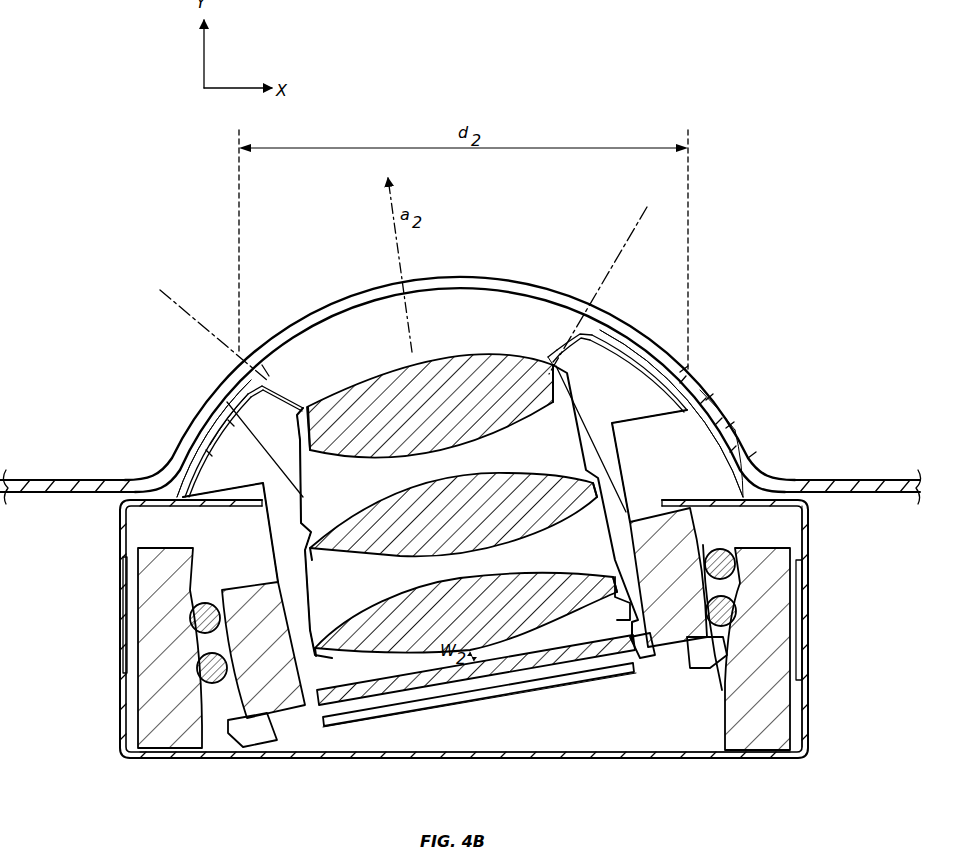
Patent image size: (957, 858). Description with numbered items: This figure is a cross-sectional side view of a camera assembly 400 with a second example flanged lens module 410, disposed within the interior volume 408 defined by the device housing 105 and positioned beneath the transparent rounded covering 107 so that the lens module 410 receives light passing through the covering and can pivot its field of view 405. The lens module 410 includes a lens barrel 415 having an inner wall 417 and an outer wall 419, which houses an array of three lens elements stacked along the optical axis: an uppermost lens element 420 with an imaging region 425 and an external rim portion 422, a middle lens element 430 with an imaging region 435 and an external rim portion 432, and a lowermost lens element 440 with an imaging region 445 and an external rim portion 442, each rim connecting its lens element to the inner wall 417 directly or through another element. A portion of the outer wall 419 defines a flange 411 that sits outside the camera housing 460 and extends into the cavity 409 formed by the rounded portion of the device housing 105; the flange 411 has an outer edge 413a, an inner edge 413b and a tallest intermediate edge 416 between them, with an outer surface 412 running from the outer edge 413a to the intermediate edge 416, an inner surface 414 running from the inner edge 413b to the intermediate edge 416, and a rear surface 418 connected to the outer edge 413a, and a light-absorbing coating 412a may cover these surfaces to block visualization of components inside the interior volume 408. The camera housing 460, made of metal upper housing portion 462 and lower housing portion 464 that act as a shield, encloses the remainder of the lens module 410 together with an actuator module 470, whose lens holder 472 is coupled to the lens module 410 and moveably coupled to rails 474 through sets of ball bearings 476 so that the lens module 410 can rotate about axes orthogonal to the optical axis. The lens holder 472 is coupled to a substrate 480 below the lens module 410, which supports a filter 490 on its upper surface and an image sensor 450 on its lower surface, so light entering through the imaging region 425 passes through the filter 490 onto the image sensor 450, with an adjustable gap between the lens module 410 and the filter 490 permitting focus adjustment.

The camera assembly 400 is at (133, 168).
The device housing 105 is at (806, 480).
The transparent rounded covering 107 is at (500, 276).
The cavity 409 is at (372, 333).
The field of view 405 is at (195, 318).
The flange 411 is at (660, 368).
The lens barrel 415 is at (228, 438).
The outer edge 413a is at (717, 398).
The inner edge 413b is at (548, 357).
The interior volume 408 is at (693, 480).
The outer surface 412 is at (200, 460).
The light-absorbing coating 412a is at (234, 400).
The intermediate edge 416 is at (256, 386).
The inner surface 414 is at (284, 378).
The lens module 410 is at (617, 425).
The outer wall 419 is at (612, 458).
The rear surface 418 is at (233, 498).
The inner wall 417 is at (573, 438).
The external rim portion 422 is at (303, 445).
The external rim portion 432 is at (313, 547).
The imaging region 425 is at (352, 378).
The uppermost lens element 420 is at (453, 506).
The middle lens element 430 is at (547, 527).
The imaging region 435 is at (390, 490).
The imaging region 445 is at (365, 603).
The external rim portion 442 is at (620, 600).
The lowermost lens element 440 is at (548, 660).
The filter 490 is at (593, 662).
The substrate 480 is at (270, 751).
The camera housing 460 is at (115, 750).
The image sensor 450 is at (380, 757).
The upper housing portion 462 is at (810, 532).
The lower housing portion 464 is at (806, 722).
The rails 474 is at (138, 728).
The lens holder 472 is at (213, 694).
The ball bearings 476 is at (190, 612).
The actuator module 470 is at (718, 676).